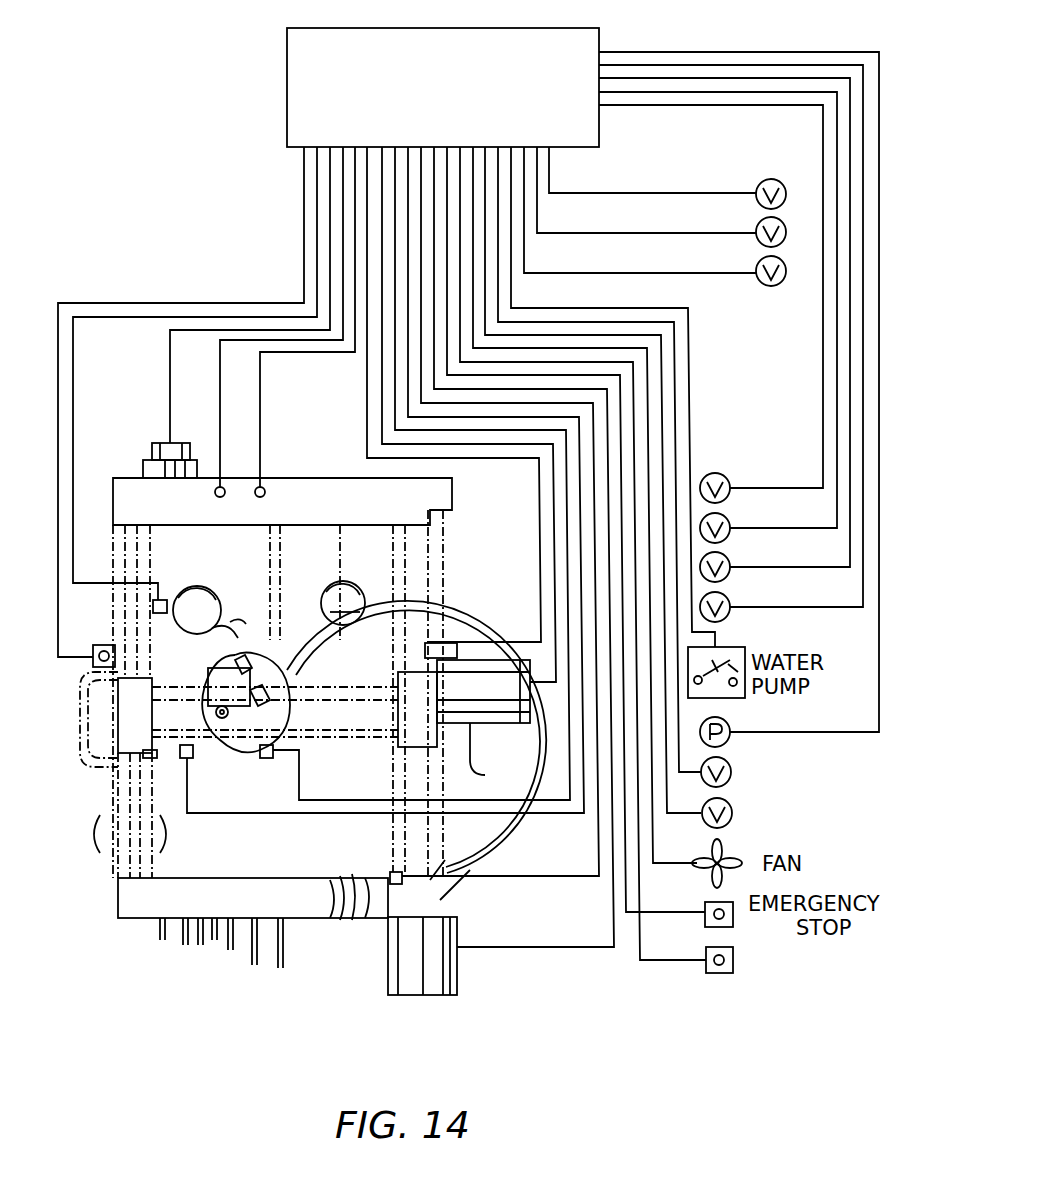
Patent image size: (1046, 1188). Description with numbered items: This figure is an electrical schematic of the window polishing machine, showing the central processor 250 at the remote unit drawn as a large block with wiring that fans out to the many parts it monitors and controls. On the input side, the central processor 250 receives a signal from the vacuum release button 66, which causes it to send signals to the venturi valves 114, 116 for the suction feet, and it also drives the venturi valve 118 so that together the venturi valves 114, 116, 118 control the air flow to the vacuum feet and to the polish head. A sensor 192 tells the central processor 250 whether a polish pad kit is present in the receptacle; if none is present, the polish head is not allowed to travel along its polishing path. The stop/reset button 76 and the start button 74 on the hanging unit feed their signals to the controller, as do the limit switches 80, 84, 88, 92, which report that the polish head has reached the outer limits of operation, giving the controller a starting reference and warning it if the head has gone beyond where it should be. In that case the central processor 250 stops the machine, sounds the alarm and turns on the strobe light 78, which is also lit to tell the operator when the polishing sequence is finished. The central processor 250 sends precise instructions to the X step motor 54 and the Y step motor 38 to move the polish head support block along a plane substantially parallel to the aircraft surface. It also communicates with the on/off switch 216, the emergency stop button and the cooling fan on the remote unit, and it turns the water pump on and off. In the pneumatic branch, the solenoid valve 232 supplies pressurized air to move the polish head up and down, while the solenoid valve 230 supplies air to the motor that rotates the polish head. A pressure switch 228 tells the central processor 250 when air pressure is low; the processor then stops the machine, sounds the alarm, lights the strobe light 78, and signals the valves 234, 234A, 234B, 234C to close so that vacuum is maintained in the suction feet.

The central processor 250 is at (287, 92).
The venturi valve 114 is at (769, 189).
The venturi valve 116 is at (758, 223).
The venturi valve 118 is at (772, 276).
The valve 234 is at (728, 473).
The valve 234A is at (730, 522).
The valve 234B is at (730, 562).
The valve 234C is at (730, 600).
The pressure switch 228 is at (731, 738).
The solenoid valve 230 is at (732, 775).
The solenoid valve 232 is at (733, 814).
The on/off switch 216 is at (735, 962).
The strobe light 78 is at (150, 449).
The stop/reset button 76 is at (215, 494).
The start button 74 is at (263, 486).
The sensor 192 is at (165, 598).
The vacuum release button 66 is at (94, 660).
The limit switch 84 is at (398, 667).
The X step motor 54 is at (520, 642).
The limit switch 92 is at (285, 744).
The limit switch 88 is at (193, 758).
The limit switch 80 is at (390, 872).
The Y step motor 38 is at (390, 982).